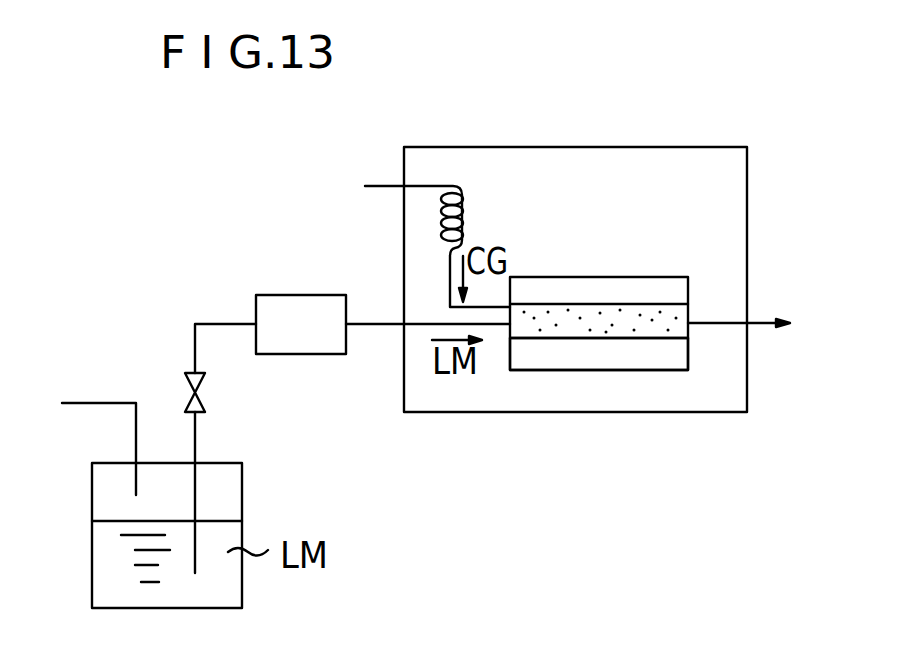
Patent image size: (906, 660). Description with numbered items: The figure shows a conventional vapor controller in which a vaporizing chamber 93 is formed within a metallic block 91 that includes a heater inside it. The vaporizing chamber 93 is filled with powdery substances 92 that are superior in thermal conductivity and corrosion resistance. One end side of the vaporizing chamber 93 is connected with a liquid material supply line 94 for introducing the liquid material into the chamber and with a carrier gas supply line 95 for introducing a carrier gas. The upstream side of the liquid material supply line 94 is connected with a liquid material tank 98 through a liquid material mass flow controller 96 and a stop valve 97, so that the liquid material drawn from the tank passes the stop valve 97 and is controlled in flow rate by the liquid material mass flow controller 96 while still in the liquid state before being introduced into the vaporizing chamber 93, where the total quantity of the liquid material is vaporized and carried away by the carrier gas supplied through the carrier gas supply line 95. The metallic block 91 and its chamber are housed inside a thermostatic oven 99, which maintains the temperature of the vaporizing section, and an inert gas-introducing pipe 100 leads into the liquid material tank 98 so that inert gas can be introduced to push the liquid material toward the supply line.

The metallic block 91 is at (624, 277).
The porous layer 92 is at (597, 338).
The vaporizing chamber 93 is at (652, 338).
The liquid material supply line 94 is at (375, 325).
The carrier gas supply line 95 is at (447, 270).
The liquid material mass flow controller 96 is at (292, 295).
The stop valve 97 is at (207, 403).
The liquid material tank 98 is at (92, 572).
The thermostatic oven 99 is at (747, 233).
The inert gas-introducing pipe 100 is at (82, 402).